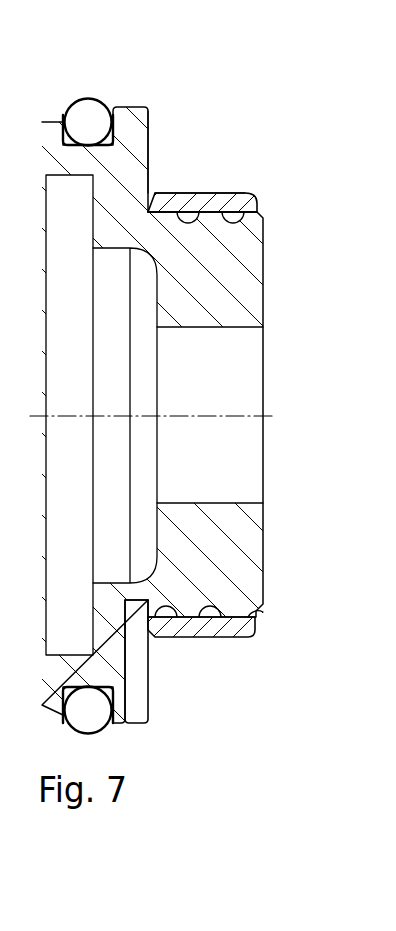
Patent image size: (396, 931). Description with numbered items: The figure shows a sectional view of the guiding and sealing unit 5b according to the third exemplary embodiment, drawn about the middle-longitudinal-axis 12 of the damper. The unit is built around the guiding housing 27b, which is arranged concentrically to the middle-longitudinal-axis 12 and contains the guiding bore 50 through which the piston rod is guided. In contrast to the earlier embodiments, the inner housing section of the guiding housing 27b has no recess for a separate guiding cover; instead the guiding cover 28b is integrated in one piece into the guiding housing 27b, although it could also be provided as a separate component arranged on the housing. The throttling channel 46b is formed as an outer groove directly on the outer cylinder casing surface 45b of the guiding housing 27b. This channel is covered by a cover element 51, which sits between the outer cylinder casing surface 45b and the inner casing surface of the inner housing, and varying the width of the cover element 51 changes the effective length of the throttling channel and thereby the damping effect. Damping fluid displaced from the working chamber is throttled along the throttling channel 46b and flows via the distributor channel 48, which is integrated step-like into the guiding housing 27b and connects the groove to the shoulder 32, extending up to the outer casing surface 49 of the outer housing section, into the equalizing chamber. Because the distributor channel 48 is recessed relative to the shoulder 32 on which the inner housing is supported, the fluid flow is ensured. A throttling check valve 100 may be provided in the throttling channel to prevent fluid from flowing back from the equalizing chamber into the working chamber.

The guiding and sealing unit 5b is at (209, 321).
The middle-longitudinal-axis 12 is at (265, 416).
The guiding housing 27b is at (139, 98).
The guiding cover 28b is at (257, 274).
The shoulder 32 is at (150, 147).
The outer cylinder casing surface 45b is at (248, 193).
The throttling channel 46b is at (243, 217).
The distributor channel 48 is at (143, 675).
The outer casing surface 49 is at (118, 108).
The guiding bore 50 is at (250, 379).
The cover element 51 is at (212, 194).
The throttling check valve 100 is at (189, 211).